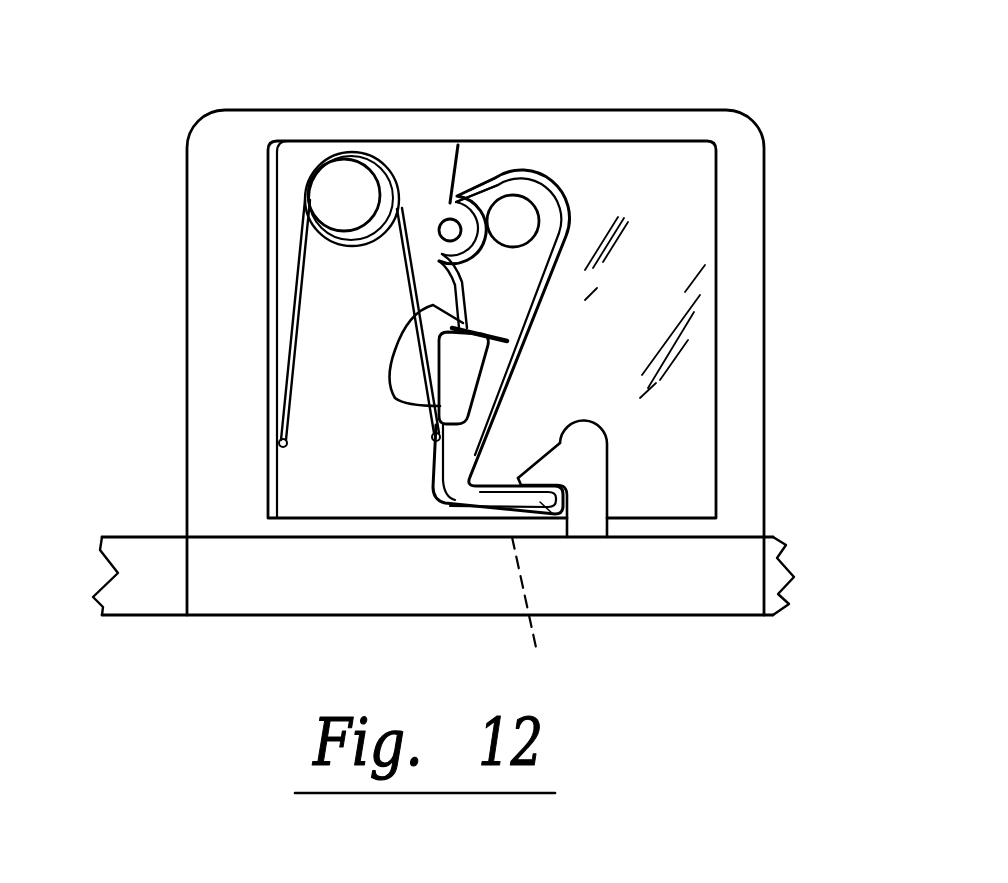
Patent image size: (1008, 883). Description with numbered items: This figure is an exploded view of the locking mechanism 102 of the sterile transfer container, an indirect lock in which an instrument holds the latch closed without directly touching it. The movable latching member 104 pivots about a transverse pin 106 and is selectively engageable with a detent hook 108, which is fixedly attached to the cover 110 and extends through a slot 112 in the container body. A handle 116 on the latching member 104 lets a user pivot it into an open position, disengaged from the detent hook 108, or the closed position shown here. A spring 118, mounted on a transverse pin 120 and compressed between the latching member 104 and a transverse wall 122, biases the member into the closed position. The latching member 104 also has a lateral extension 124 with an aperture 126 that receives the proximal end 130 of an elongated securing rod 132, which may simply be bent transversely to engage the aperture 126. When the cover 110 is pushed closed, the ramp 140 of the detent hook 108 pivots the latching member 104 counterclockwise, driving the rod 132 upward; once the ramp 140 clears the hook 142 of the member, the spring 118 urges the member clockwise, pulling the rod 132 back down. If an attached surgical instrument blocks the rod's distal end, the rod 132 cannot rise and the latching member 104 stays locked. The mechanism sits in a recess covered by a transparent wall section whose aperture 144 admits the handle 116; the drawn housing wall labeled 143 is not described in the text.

The locking mechanism 102 is at (537, 174).
The movable latching member 104 is at (527, 317).
The transverse pin 106 is at (515, 222).
The detent hook 108 is at (606, 438).
The cover 110 is at (677, 585).
The slot 112 is at (555, 606).
The handle 116 is at (467, 362).
The spring 118 is at (290, 396).
The transverse pin 120 is at (353, 195).
The transverse wall 122 is at (275, 490).
The lateral extension 124 is at (438, 209).
The aperture 126 is at (481, 195).
The proximal end 130 is at (452, 232).
The elongated securing rod 132 is at (472, 200).
The ramp 140 is at (553, 433).
The hook 142 is at (540, 502).
The housing 143 is at (678, 242).
The aperture 144 is at (409, 364).